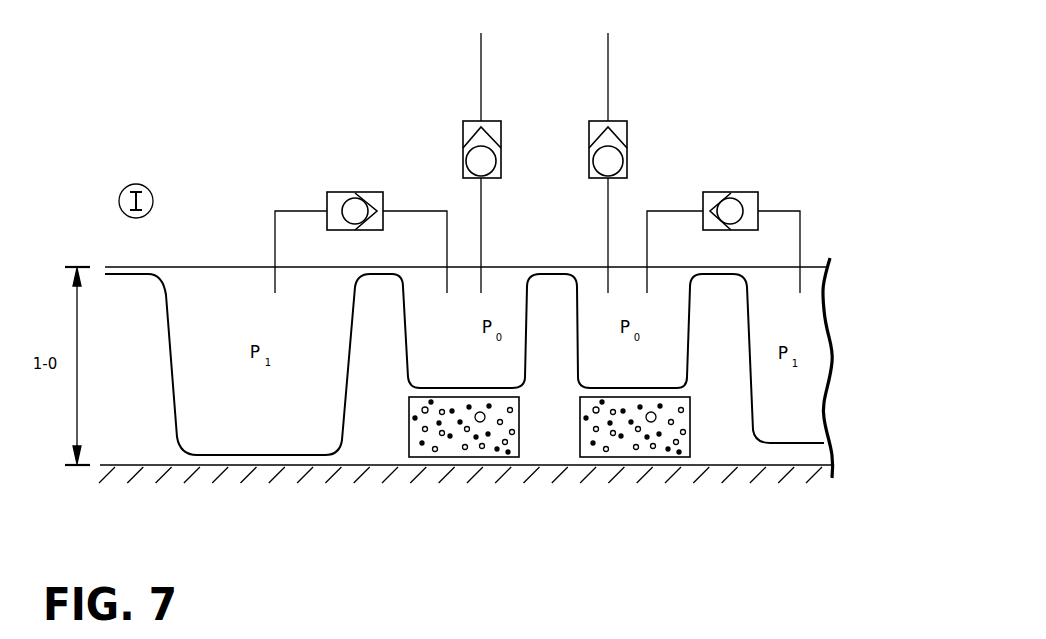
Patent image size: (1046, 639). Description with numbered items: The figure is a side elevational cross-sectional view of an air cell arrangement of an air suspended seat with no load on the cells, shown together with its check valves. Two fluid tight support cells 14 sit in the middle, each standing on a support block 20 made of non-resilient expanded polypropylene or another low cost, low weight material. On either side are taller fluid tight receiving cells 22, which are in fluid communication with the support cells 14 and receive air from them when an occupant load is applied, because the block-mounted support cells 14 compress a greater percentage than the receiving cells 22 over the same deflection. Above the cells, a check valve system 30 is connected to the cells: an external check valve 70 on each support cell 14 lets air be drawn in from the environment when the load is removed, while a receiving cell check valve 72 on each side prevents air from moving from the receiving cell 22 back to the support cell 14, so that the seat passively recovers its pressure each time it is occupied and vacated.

The fluid tight support cell 14 is at (512, 293).
The support block 20 is at (457, 447).
The fluid tight receiving cell 22 is at (260, 425).
The check valve system 30 is at (697, 106).
The external check valve 70 is at (589, 137).
The receiving cell check valve 72 is at (368, 192).